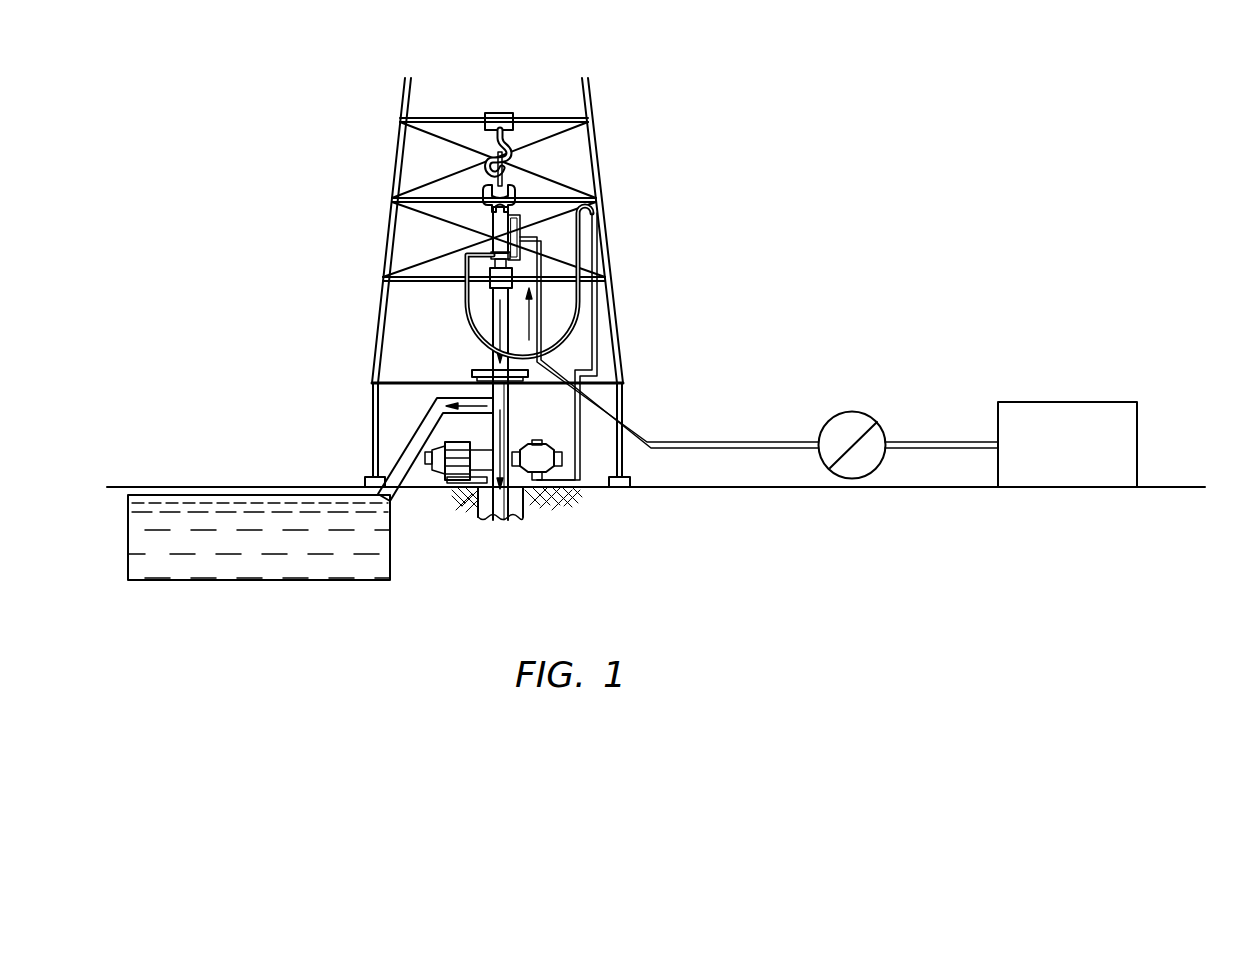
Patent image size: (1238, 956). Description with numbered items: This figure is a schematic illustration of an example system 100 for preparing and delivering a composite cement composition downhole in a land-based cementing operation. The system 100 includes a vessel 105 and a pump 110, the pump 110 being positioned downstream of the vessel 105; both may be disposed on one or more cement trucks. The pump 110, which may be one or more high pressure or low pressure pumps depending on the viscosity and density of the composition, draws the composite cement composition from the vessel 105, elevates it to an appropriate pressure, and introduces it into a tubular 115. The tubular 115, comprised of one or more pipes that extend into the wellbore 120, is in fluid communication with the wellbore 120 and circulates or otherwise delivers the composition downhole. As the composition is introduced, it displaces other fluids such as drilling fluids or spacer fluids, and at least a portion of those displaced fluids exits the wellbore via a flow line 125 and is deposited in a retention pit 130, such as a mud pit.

The system 100 is at (842, 121).
The vessel 105 is at (1039, 401).
The pump 110 is at (858, 411).
The tubular 115 is at (628, 428).
The wellbore 120 is at (522, 517).
The flow line 125 is at (410, 477).
The retention pit 130 is at (178, 582).